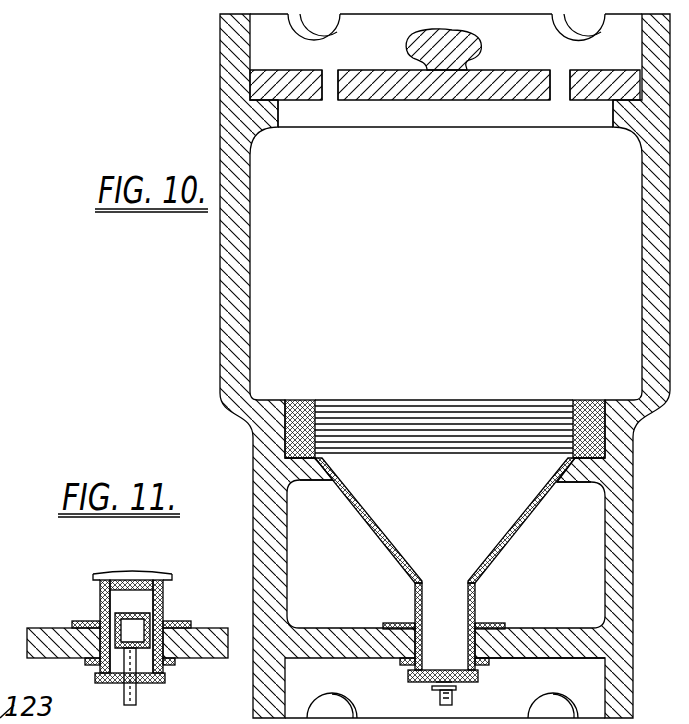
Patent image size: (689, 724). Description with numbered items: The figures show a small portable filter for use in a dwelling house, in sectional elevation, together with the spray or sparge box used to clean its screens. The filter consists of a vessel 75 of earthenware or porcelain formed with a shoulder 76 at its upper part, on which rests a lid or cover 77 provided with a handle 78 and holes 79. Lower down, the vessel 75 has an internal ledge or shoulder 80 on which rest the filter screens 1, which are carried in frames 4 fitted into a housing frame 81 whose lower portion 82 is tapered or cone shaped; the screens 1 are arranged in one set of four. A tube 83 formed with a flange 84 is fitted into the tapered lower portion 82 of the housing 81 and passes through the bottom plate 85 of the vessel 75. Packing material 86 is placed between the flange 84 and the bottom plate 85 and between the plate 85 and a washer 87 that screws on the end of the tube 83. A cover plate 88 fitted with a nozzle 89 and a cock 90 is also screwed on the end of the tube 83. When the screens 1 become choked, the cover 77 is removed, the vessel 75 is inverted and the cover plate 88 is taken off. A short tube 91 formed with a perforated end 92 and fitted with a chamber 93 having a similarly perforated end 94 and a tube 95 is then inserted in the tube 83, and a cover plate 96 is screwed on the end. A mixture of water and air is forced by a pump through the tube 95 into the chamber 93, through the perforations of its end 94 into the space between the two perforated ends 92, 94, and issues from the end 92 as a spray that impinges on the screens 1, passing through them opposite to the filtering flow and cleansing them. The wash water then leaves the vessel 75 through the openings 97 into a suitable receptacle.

In FIG. 10, the filter screens 1 is at (446, 452).
In FIG. 10, the frames 4 is at (315, 404).
In FIG. 10, the vessel 75 is at (248, 262).
In FIG. 10, the shoulder 76 is at (300, 144).
In FIG. 10, the lid or cover 77 is at (485, 101).
In FIG. 10, the handle 78 is at (482, 46).
In FIG. 10, the holes 79 is at (331, 85).
In FIG. 10, the internal ledge or shoulder 80 is at (586, 472).
In FIG. 10, the housing frame 81 is at (318, 457).
In FIG. 10, the lower portion 82 is at (445, 516).
In FIG. 11, the lower portion 82 is at (160, 577).
In FIG. 10, the tube 83 is at (445, 626).
In FIG. 11, the tube 83 is at (100, 592).
In FIG. 10, the flange 84 is at (404, 624).
In FIG. 11, the flange 84 is at (80, 622).
In FIG. 10, the bottom plate 85 is at (545, 659).
In FIG. 11, the bottom plate 85 is at (222, 640).
In FIG. 10, the packing material 86 is at (505, 631).
In FIG. 11, the packing material 86 is at (200, 670).
In FIG. 10, the washer 87 is at (487, 667).
In FIG. 11, the washer 87 is at (178, 668).
In FIG. 10, the cover plate 88 is at (414, 683).
In FIG. 10, the nozzle 89 is at (455, 692).
In FIG. 10, the cock 90 is at (446, 695).
In FIG. 11, the short tube 91 is at (160, 600).
In FIG. 11, the perforated end 92 is at (130, 580).
In FIG. 11, the chamber 93 is at (132, 630).
In FIG. 11, the perforated end 94 is at (133, 603).
In FIG. 11, the tube 95 is at (136, 690).
In FIG. 11, the cover plate 96 is at (105, 682).
In FIG. 10, the openings 97 is at (308, 24).